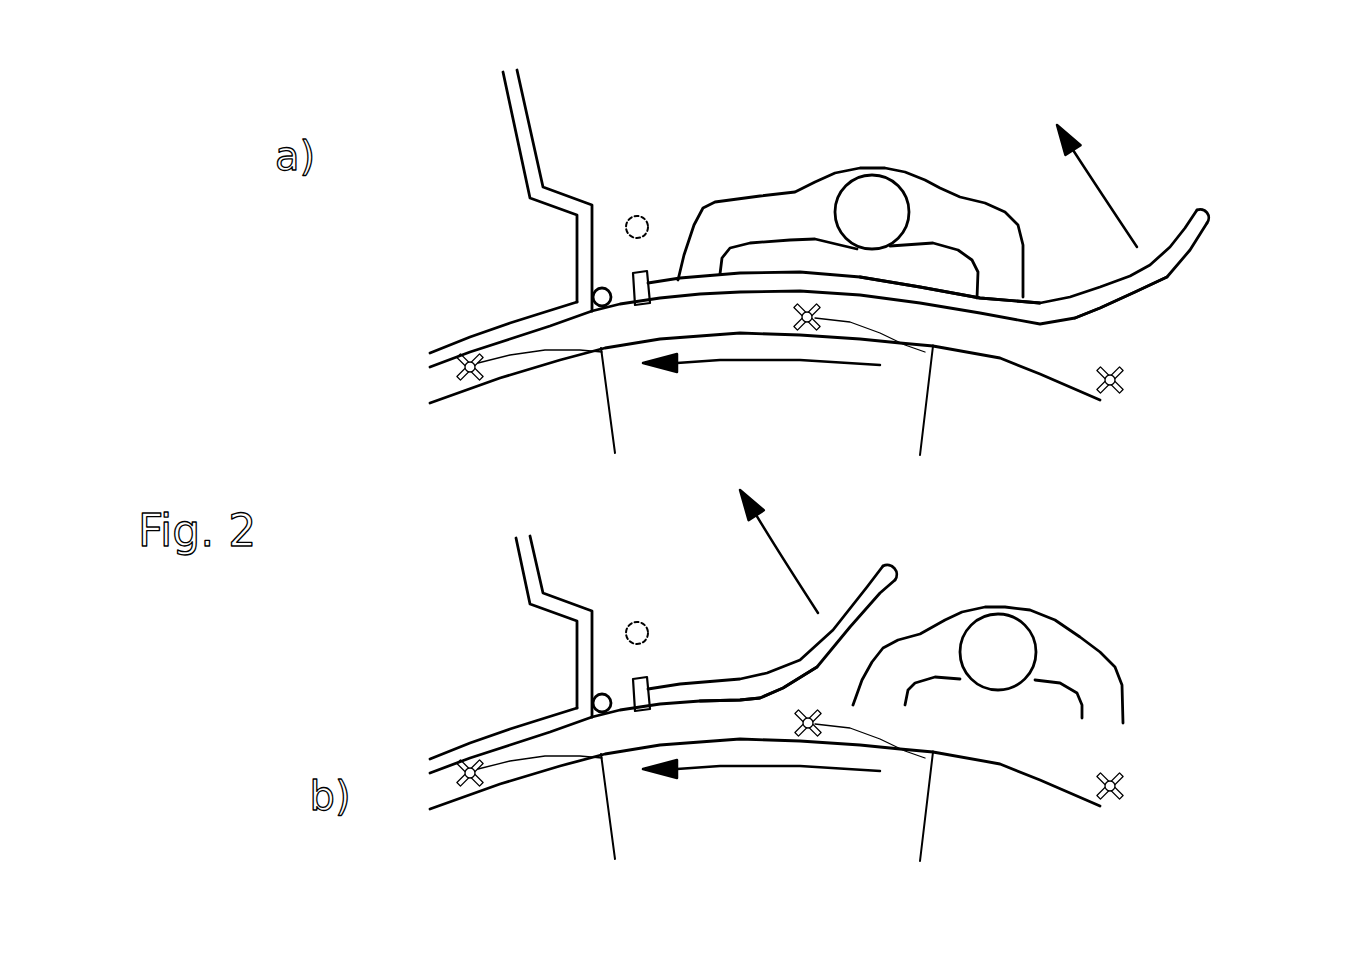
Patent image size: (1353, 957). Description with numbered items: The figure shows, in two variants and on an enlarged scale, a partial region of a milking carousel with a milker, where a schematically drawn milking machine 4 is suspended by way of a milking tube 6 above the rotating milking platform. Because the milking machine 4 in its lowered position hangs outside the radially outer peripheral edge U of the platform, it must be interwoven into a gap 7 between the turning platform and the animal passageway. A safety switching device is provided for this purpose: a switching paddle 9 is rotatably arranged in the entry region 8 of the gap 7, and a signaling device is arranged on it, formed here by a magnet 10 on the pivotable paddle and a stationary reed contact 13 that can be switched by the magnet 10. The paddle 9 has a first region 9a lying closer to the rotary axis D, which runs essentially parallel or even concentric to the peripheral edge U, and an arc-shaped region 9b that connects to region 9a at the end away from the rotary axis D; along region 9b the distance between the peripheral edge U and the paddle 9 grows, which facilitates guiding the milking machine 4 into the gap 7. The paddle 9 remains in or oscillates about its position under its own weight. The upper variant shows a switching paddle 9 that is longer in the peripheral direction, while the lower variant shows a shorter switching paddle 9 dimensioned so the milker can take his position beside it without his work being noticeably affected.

In FIG. 2a, the milking machine 4 is at (1117, 380).
In FIG. 2b, the milking machine 4 is at (1117, 786).
In FIG. 2a, the milking tube 6 is at (910, 355).
In FIG. 2b, the milking tube 6 is at (917, 760).
In FIG. 2a, the gap 7 is at (547, 337).
In FIG. 2b, the gap 7 is at (547, 743).
In FIG. 2a, the entry region 8 is at (615, 268).
In FIG. 2b, the entry region 8 is at (615, 674).
In FIG. 2a, the switching paddle 9 is at (1210, 186).
In FIG. 2b, the switching paddle 9 is at (901, 551).
In FIG. 2a, the first region 9a is at (963, 300).
In FIG. 2a, the arc-shaped region 9b is at (1160, 273).
In FIG. 2b, the arc-shaped region 9b is at (762, 688).
In FIG. 2a, the magnet 10 is at (647, 272).
In FIG. 2b, the magnet 10 is at (647, 678).
In FIG. 2a, the reed contact 13 is at (637, 216).
In FIG. 2b, the reed contact 13 is at (637, 622).
In FIG. 2a, the rotary axis D is at (594, 291).
In FIG. 2b, the rotary axis D is at (594, 697).
In FIG. 2a, the outer peripheral edge U is at (1023, 367).
In FIG. 2b, the outer peripheral edge U is at (1027, 777).